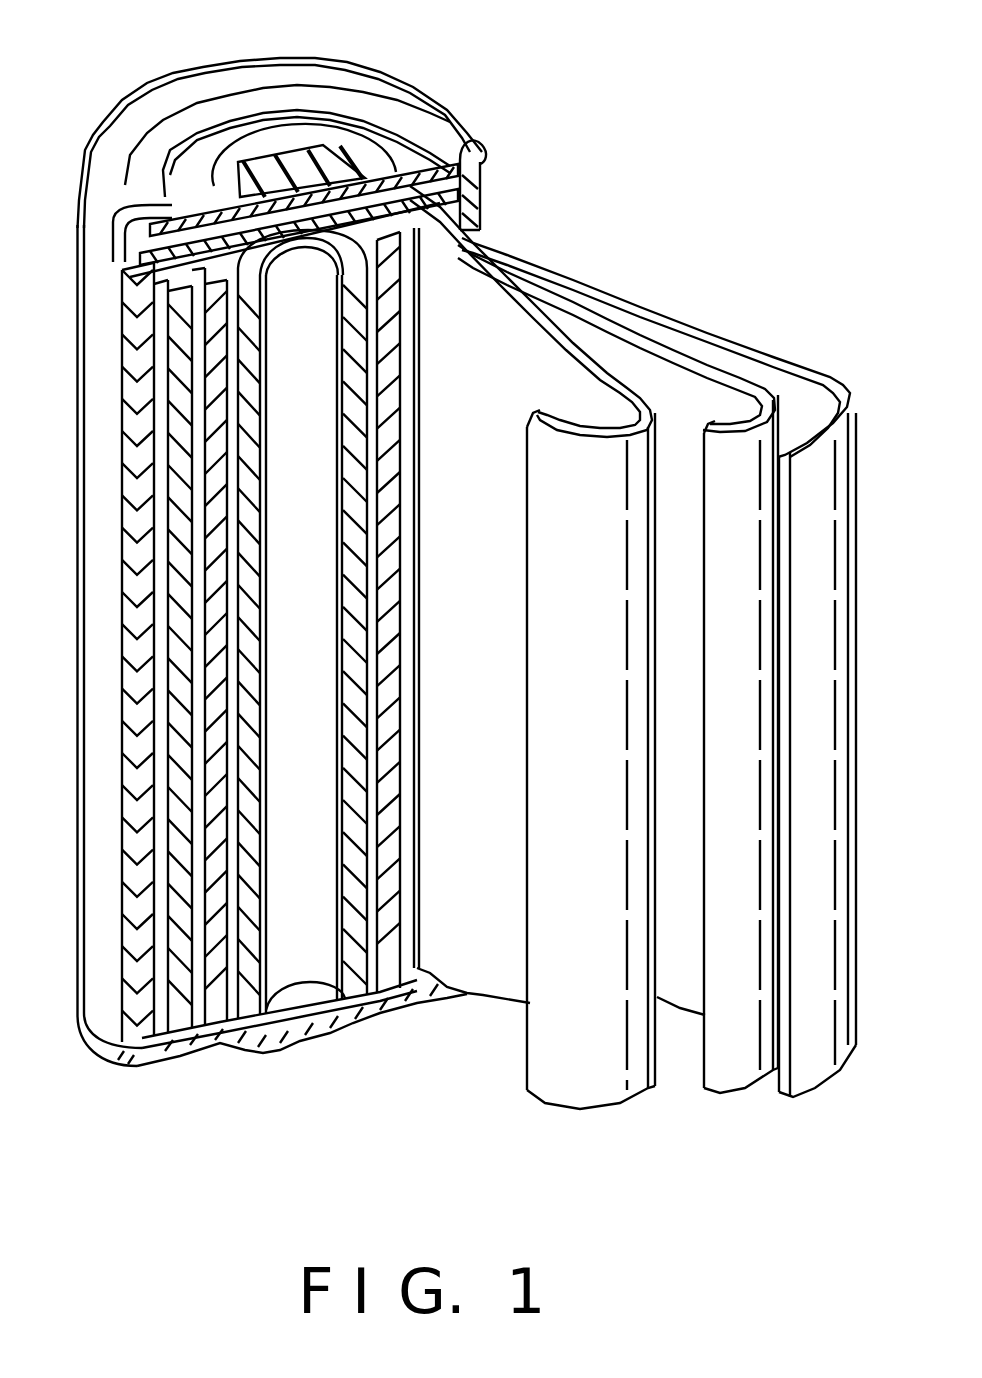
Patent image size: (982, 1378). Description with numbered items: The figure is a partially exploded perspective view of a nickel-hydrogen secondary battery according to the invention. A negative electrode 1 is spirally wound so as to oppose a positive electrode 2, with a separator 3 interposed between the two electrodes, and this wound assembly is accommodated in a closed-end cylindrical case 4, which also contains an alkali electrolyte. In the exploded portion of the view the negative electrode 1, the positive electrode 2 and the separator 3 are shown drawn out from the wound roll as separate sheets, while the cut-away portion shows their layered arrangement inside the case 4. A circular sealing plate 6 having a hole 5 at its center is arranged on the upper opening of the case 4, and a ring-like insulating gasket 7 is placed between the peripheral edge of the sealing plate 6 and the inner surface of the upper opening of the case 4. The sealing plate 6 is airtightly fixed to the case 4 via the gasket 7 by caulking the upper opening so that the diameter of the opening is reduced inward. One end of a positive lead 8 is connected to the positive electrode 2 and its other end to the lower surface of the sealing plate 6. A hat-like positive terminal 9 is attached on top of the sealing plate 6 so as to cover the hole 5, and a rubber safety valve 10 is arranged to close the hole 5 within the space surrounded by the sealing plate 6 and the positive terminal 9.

The negative electrode 1 is at (532, 677).
The positive electrode 2 is at (659, 690).
The separator 3 is at (618, 703).
The closed-end cylindrical case 4 is at (392, 611).
The hole 5 is at (304, 119).
The sealing plate 6 is at (294, 150).
The insulating gasket 7 is at (475, 110).
The positive lead 8 is at (264, 160).
The positive terminal 9 is at (304, 93).
The rubber safety valve 10 is at (276, 100).